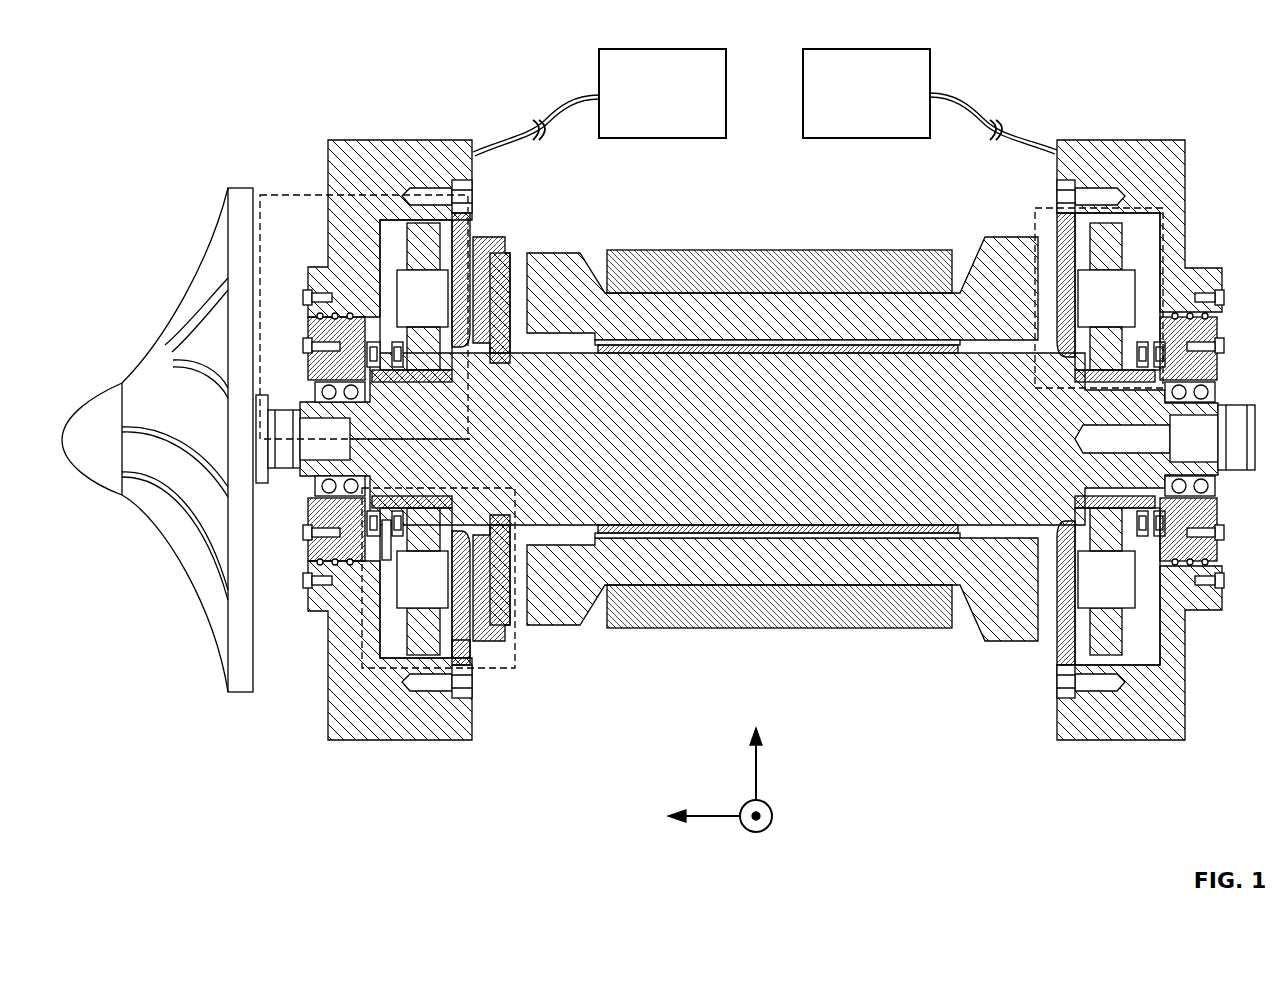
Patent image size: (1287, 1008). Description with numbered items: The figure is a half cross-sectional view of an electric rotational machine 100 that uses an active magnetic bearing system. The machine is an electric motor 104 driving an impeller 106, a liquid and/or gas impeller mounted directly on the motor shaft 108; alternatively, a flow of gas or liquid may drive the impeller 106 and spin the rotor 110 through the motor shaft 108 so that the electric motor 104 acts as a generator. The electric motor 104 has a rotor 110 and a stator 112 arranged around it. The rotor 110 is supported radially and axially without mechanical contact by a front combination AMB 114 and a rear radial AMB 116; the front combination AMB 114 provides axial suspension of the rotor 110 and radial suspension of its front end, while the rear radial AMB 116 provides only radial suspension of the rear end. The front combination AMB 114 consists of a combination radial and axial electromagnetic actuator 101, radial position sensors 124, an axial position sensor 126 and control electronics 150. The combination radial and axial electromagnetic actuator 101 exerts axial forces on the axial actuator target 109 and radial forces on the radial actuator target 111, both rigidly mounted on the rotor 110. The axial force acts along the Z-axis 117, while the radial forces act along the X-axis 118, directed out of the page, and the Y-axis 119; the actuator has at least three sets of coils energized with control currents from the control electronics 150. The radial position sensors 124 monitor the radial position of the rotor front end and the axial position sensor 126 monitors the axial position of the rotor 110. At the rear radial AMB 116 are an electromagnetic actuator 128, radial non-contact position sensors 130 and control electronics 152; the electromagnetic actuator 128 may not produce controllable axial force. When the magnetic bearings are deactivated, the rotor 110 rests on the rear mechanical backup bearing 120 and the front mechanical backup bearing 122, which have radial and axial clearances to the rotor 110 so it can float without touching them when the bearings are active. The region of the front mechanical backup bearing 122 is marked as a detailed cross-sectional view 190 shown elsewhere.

The electric rotational machine 100 is at (182, 118).
The combination radial and axial electromagnetic actuator 101 is at (453, 645).
The electric motor 104 is at (385, 155).
The impeller 106 is at (168, 345).
The motor shaft 108 is at (262, 490).
The axial actuator target 109 is at (495, 350).
The rotor 110 is at (638, 393).
The radial actuator target 111 is at (428, 372).
The stator 112 is at (767, 264).
The front combination AMB 114 is at (517, 644).
The rear radial AMB 116 is at (1165, 230).
The Z-axis 117 is at (655, 800).
The X-axis 118 is at (770, 848).
The Y-axis 119 is at (770, 708).
The rear mechanical backup bearing 120 is at (1190, 405).
The front mechanical backup bearing 122 is at (375, 530).
The radial position sensors 124 is at (384, 555).
The axial position sensor 126 is at (400, 530).
The electromagnetic actuator 128 is at (1097, 587).
The radial non-contact position sensors 130 is at (1192, 348).
The control electronics 150 is at (640, 104).
The control electronics 152 is at (844, 104).
The detailed cross-sectional view 190 is at (276, 193).